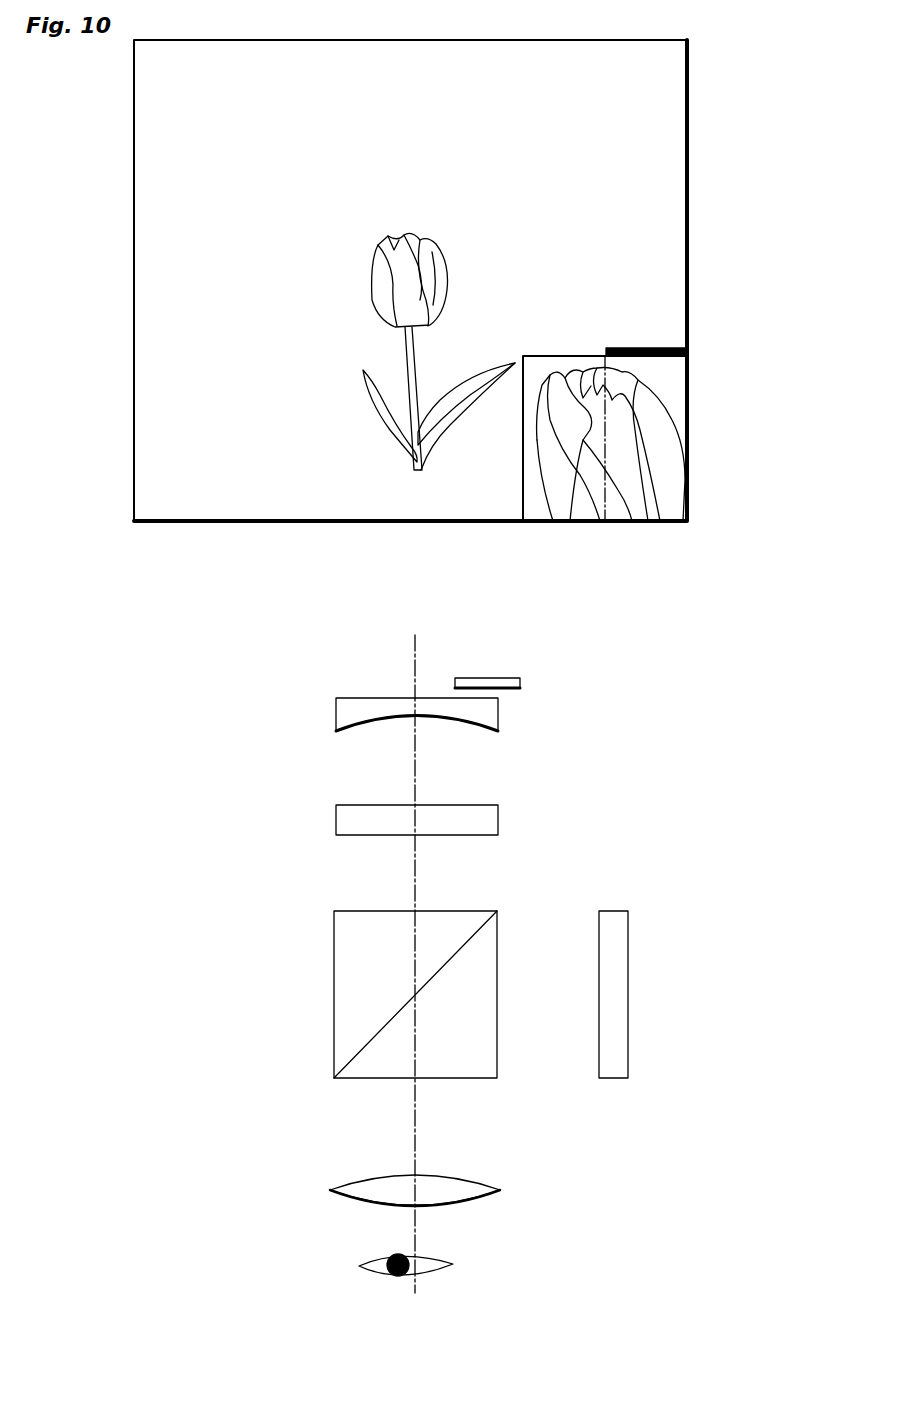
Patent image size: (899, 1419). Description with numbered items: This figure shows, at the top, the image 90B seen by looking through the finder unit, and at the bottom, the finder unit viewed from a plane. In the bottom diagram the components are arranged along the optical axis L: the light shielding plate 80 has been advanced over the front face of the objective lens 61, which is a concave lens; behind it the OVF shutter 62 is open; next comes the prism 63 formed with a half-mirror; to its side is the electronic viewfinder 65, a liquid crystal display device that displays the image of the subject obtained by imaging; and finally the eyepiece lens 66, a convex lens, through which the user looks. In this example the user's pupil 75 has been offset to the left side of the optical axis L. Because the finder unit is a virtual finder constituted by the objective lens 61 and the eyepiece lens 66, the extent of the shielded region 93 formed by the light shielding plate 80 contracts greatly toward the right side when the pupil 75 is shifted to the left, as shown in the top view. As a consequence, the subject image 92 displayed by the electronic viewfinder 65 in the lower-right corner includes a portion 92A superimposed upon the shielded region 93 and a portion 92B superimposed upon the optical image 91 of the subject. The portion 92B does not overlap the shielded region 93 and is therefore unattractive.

The image 90B is at (668, 270).
The optical image of the subject 91 is at (443, 202).
The subject image 92 is at (672, 393).
The portion superimposed upon the shielded region 92A is at (658, 500).
The portion superimposed upon the optical image of the subject 92B is at (534, 503).
The shielded region 93 is at (640, 347).
The optical axis L is at (415, 672).
The light shielding plate 80 is at (503, 678).
The objective lens 61 is at (490, 712).
The OVF shutter 62 is at (488, 820).
The prism 63 is at (497, 985).
The electronic viewfinder 65 is at (628, 970).
The eyepiece lens 66 is at (470, 1178).
The pupil 75 is at (437, 1274).